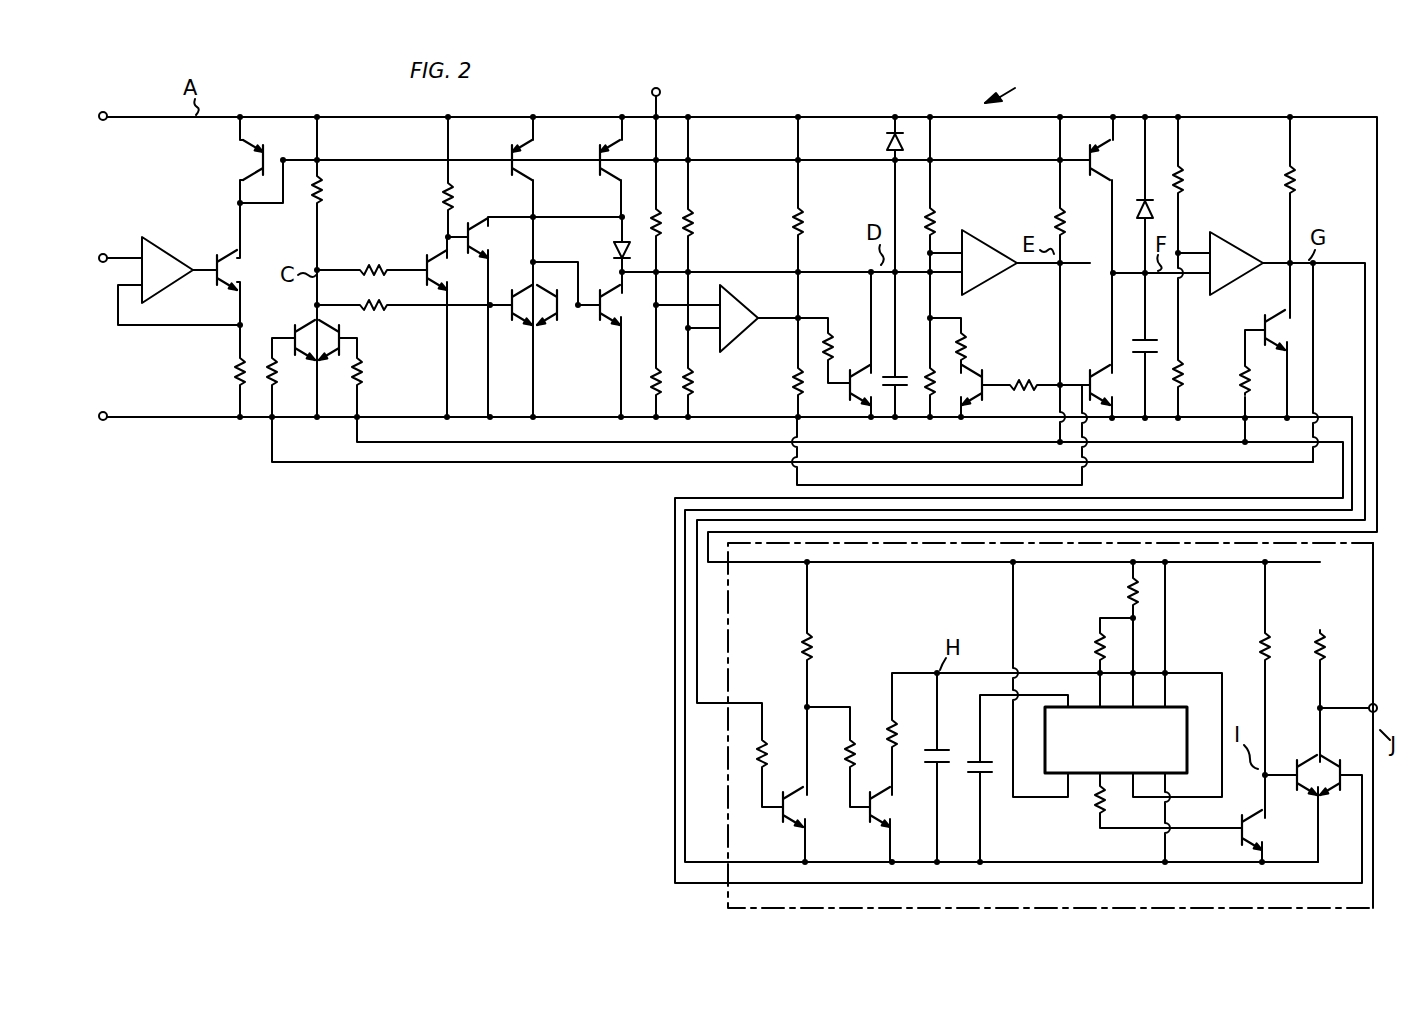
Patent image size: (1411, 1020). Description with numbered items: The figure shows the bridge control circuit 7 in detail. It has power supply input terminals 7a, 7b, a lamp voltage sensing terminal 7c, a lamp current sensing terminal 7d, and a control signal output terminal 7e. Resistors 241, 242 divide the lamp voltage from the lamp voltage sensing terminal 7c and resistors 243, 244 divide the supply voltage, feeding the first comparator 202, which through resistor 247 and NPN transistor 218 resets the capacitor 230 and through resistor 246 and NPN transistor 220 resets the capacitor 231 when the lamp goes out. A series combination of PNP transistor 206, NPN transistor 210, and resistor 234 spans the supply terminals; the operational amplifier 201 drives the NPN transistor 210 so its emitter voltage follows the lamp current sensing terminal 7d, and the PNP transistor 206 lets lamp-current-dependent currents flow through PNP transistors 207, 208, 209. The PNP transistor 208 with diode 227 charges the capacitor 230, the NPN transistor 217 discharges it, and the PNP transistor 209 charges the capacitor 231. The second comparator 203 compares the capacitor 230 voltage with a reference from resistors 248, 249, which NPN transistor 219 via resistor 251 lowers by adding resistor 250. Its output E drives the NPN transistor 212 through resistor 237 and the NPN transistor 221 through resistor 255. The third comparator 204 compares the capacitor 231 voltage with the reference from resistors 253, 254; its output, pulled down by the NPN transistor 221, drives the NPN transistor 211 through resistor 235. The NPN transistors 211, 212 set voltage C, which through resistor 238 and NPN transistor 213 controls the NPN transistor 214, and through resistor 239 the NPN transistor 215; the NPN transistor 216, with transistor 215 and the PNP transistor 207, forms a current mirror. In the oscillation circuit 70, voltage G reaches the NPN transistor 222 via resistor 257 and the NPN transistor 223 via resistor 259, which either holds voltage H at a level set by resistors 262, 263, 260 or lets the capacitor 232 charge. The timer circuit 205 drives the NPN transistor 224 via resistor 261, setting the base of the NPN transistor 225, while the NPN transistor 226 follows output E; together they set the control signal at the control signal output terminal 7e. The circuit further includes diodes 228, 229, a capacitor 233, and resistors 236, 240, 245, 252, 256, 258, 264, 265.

The bridge control circuit 7 is at (1037, 87).
The oscillation circuit 70 is at (1378, 586).
The power supply input terminal 7a is at (101, 112).
The power supply input terminal 7b is at (101, 410).
The lamp voltage sensing terminal 7c is at (664, 92).
The lamp current sensing terminal 7d is at (101, 256).
The control signal output terminal 7e is at (1377, 702).
The operational amplifier 201 is at (180, 258).
The first comparator 202 is at (752, 282).
The second comparator 203 is at (995, 242).
The third comparator 204 is at (1248, 248).
The timer circuit 205 is at (1190, 724).
The PNP transistor 206 is at (267, 133).
The PNP transistor 207 is at (506, 160).
The PNP transistor 208 is at (594, 160).
The PNP transistor 209 is at (1080, 147).
The NPN transistor 210 is at (252, 268).
The NPN transistor 211 is at (295, 365).
The NPN transistor 212 is at (331, 365).
The NPN transistor 213 is at (410, 262).
The NPN transistor 214 is at (474, 217).
The NPN transistor 215 is at (514, 327).
The NPN transistor 216 is at (550, 327).
The NPN transistor 217 is at (602, 330).
The NPN transistor 218 is at (856, 406).
The NPN transistor 219 is at (990, 378).
The NPN transistor 220 is at (1080, 372).
The NPN transistor 221 is at (1254, 329).
The NPN transistor 222 is at (774, 824).
The NPN transistor 223 is at (859, 824).
The NPN transistor 224 is at (1262, 830).
The NPN transistor 225 is at (1288, 766).
The NPN transistor 226 is at (1338, 766).
The diode 227 is at (611, 253).
The diode 228 is at (885, 144).
The diode 229 is at (1138, 226).
The capacitor 230 is at (882, 348).
The capacitor 231 is at (1140, 332).
The capacitor 232 is at (923, 767).
The capacitor 233 is at (987, 785).
The resistor 234 is at (214, 376).
The resistor 235 is at (262, 339).
The resistor 236 is at (324, 198).
The resistor 237 is at (365, 372).
The resistor 238 is at (367, 269).
The resistor 239 is at (379, 320).
The resistor 240 is at (433, 202).
The resistor 241 is at (682, 212).
The resistor 242 is at (670, 398).
The resistor 243 is at (698, 216).
The resistor 244 is at (698, 376).
The resistor 245 is at (818, 218).
The resistor 246 is at (780, 378).
The resistor 247 is at (839, 358).
The resistor 248 is at (949, 218).
The resistor 249 is at (938, 336).
The resistor 250 is at (994, 324).
The resistor 251 is at (1028, 376).
The resistor 252 is at (1050, 216).
The resistor 253 is at (1196, 182).
The resistor 254 is at (1194, 382).
The resistor 255 is at (1236, 392).
The resistor 256 is at (1304, 182).
The resistor 257 is at (772, 736).
The resistor 258 is at (820, 646).
The resistor 259 is at (852, 736).
The resistor 260 is at (876, 708).
The resistor 261 is at (1086, 816).
The resistor 262 is at (1126, 594).
The resistor 263 is at (1091, 650).
The resistor 264 is at (1279, 644).
The resistor 265 is at (1334, 644).